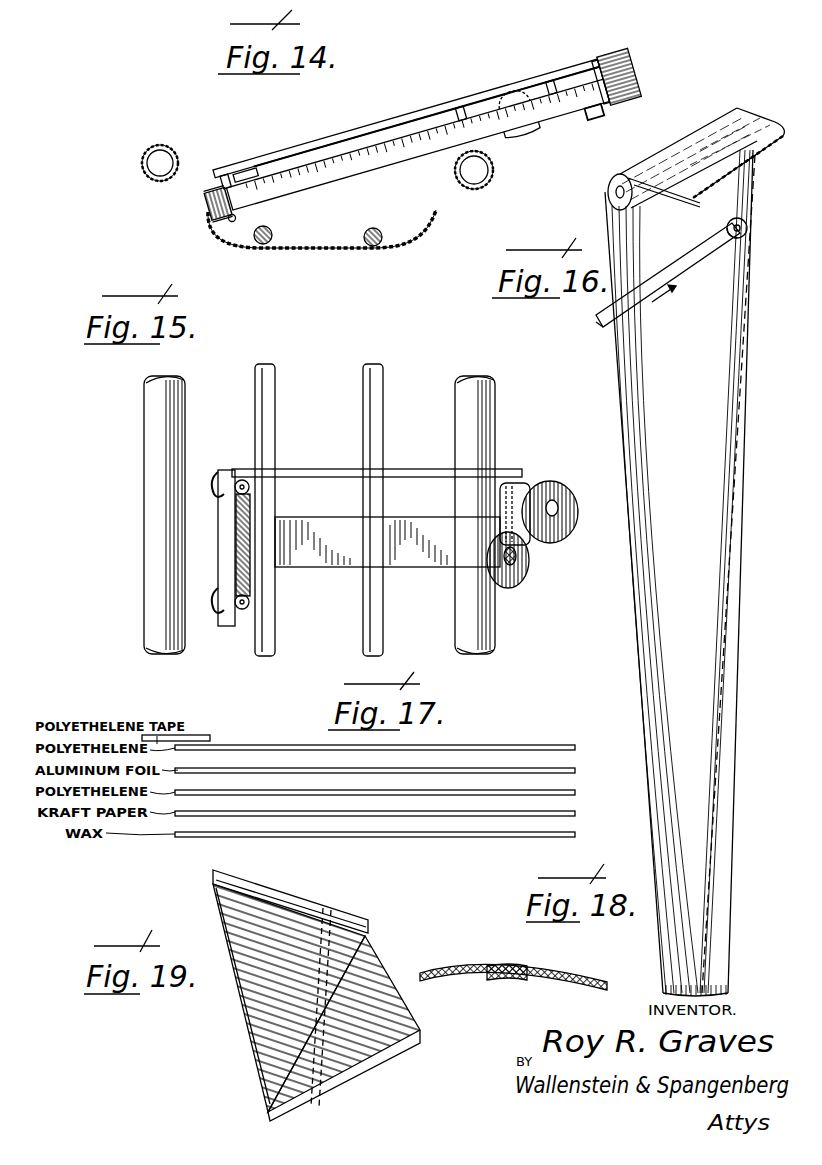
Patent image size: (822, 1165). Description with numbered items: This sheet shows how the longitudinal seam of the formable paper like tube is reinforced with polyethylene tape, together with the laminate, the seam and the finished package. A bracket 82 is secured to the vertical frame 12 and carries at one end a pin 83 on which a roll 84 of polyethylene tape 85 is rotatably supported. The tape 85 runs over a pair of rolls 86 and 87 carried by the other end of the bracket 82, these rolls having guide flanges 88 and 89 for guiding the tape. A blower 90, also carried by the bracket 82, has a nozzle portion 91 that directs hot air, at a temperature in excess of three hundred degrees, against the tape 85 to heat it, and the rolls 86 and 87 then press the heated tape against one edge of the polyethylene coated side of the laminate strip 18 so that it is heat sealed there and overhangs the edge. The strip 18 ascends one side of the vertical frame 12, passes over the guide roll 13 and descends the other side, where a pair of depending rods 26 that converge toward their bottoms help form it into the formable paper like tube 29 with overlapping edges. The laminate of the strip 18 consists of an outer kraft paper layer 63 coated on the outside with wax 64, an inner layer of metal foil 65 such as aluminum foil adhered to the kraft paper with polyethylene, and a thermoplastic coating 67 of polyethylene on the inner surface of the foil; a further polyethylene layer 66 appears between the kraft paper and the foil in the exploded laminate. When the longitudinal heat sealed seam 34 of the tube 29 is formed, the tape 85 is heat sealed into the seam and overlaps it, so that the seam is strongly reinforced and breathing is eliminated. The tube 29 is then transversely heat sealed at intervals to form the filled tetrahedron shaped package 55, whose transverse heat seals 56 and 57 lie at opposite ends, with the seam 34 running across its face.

In FIG. 14, the vertical frame 12 is at (156, 146).
In FIG. 15, the vertical frame 12 is at (148, 424).
In FIG. 16, the guide roll 13 is at (616, 200).
In FIG. 14, the formable paper like strip 18 is at (322, 262).
In FIG. 16, the formable paper like strip 18 is at (690, 198).
In FIG. 17, the formable paper like strip 18 is at (539, 742).
In FIG. 18, the formable paper like strip 18 is at (428, 972).
In FIG. 19, the formable paper like strip 18 is at (243, 1041).
In FIG. 14, the depending rods 26 is at (274, 233).
In FIG. 15, the depending rods 26 is at (263, 394).
In FIG. 16, the formable paper like tube 29 is at (663, 990).
In FIG. 18, the formable paper like tube 29 is at (604, 984).
In FIG. 19, the formable paper like tube 29 is at (222, 898).
In FIG. 16, the longitudinal heat sealed seam 34 is at (728, 990).
In FIG. 18, the longitudinal heat sealed seam 34 is at (534, 966).
In FIG. 19, the longitudinal heat sealed seam 34 is at (318, 953).
In FIG. 19, the tetrahedron shaped package 55 is at (250, 993).
In FIG. 19, the transverse heat seal 56 is at (258, 894).
In FIG. 19, the transverse heat seal 57 is at (353, 1088).
In FIG. 17, the outer kraft paper layer 63 is at (562, 820).
In FIG. 18, the outer kraft paper layer 63 is at (446, 971).
In FIG. 17, the wax 64 is at (524, 838).
In FIG. 17, the metal foil layer 65 is at (546, 772).
In FIG. 18, the metal foil layer 65 is at (440, 982).
In FIG. 17, the aluminum foil layer 66 is at (562, 794).
In FIG. 17, the thermoplastic coating 67 is at (470, 746).
In FIG. 14, the bracket 82 is at (368, 130).
In FIG. 14, the pin 83 is at (596, 122).
In FIG. 15, the pin 83 is at (566, 532).
In FIG. 14, the roll of polyethylene tape 84 is at (614, 64).
In FIG. 15, the roll of polyethylene tape 84 is at (568, 478).
In FIG. 14, the polyethylene tape 85 is at (208, 206).
In FIG. 15, the polyethylene tape 85 is at (403, 470).
In FIG. 16, the polyethylene tape 85 is at (598, 319).
In FIG. 17, the polyethylene tape 85 is at (210, 738).
In FIG. 18, the polyethylene tape 85 is at (482, 990).
In FIG. 14, the roll 86 is at (229, 221).
In FIG. 15, the roll 86 is at (250, 489).
In FIG. 16, the roll 86 is at (734, 240).
In FIG. 15, the roll 87 is at (250, 605).
In FIG. 15, the guide flange 88 is at (223, 465).
In FIG. 15, the guide flange 89 is at (218, 592).
In FIG. 14, the blower 90 is at (514, 146).
In FIG. 15, the blower 90 is at (532, 576).
In FIG. 14, the nozzle portion 91 is at (348, 178).
In FIG. 15, the nozzle portion 91 is at (296, 552).